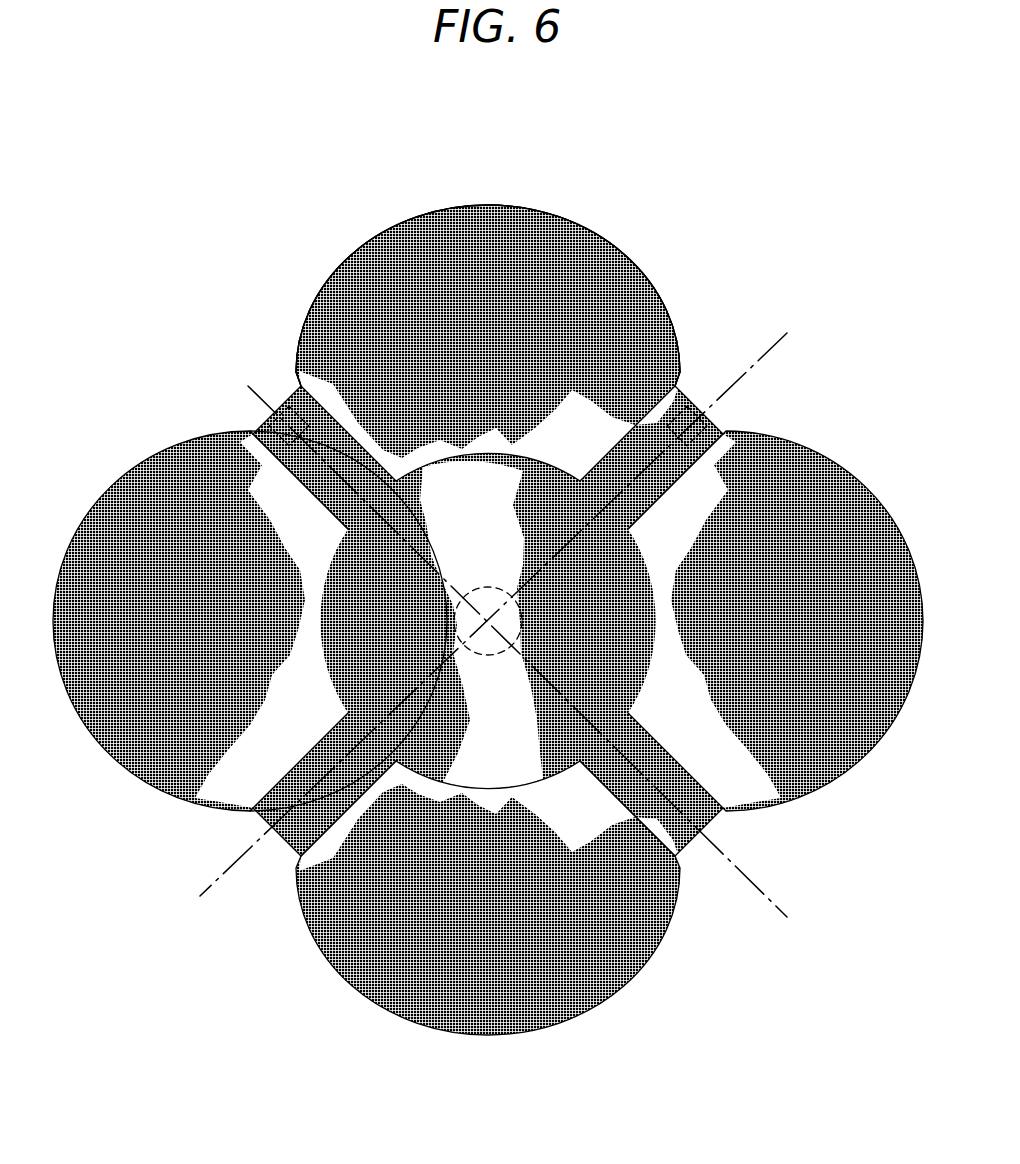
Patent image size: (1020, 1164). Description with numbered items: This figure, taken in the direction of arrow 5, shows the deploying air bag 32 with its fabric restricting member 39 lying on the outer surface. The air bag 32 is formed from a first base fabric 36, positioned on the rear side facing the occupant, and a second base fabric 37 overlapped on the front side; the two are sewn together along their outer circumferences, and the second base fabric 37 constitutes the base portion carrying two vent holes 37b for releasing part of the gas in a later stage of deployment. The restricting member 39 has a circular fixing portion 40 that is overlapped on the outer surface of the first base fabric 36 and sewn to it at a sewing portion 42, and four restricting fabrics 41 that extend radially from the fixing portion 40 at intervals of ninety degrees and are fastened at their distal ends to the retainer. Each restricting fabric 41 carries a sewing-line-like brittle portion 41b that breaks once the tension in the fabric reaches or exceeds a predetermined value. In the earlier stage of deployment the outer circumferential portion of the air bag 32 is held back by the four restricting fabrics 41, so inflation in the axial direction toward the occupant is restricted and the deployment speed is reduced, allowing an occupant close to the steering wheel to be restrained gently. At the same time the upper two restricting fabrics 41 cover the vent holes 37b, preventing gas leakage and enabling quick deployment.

The arrow 5 is at (247, 389).
The air bag 32 is at (116, 475).
The first base fabric 36 is at (387, 253).
The second base fabric 37 is at (488, 295).
The vent hole 37b is at (282, 402).
The fabric restricting member 39 is at (493, 464).
The fixing portion 40 is at (483, 743).
The restricting fabric 41 is at (322, 432).
The brittle portion 41b is at (640, 481).
The sewing portion 42 is at (477, 591).